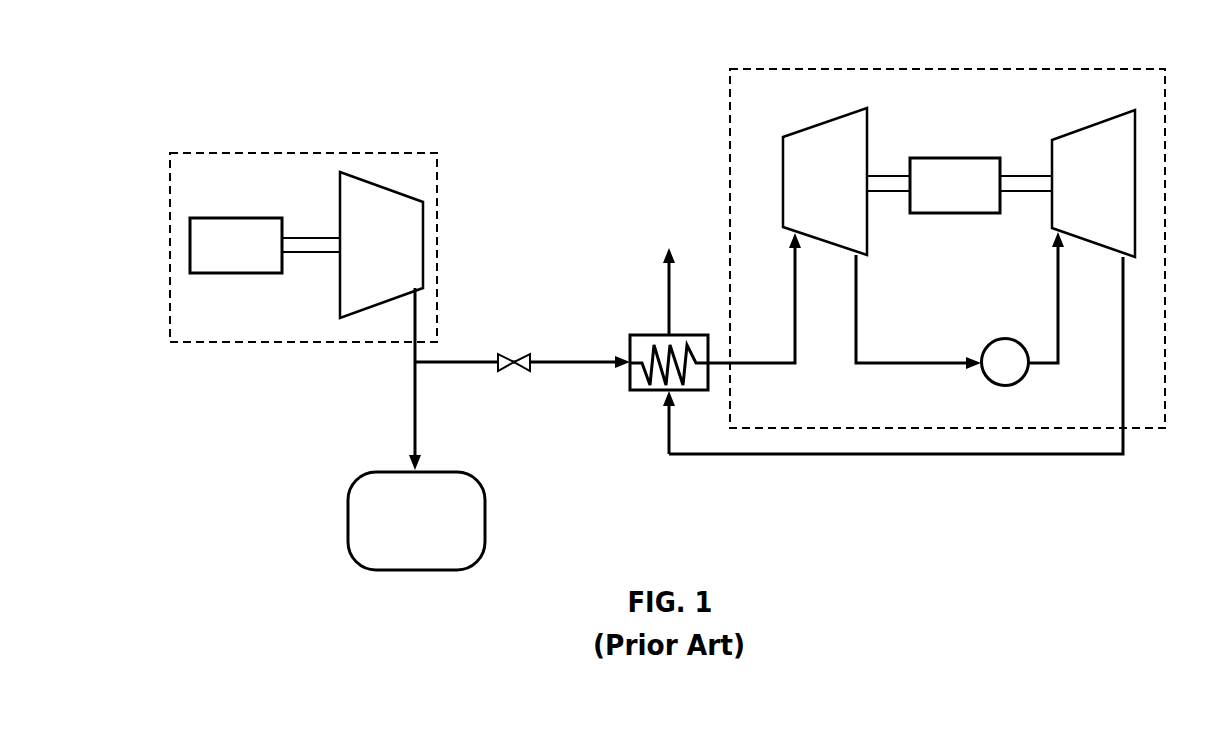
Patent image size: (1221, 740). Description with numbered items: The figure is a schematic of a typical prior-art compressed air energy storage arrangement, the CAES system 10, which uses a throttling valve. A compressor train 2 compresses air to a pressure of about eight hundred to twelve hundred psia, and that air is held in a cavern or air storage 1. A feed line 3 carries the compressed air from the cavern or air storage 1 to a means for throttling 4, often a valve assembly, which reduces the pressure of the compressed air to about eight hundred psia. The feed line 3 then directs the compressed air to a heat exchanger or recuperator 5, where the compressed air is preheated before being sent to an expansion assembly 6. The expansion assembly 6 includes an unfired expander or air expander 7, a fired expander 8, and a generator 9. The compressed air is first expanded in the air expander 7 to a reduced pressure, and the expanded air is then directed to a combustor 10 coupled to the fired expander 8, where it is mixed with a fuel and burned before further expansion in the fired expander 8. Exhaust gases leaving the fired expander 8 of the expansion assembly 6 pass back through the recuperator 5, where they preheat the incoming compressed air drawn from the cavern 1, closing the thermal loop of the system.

The cavern or air storage 1 is at (416, 521).
The compressor train 2 is at (190, 150).
The feed line 3 is at (445, 365).
The means for throttling 4 is at (510, 360).
The heat exchanger or recuperator 5 is at (630, 335).
The expansion assembly 6 is at (948, 64).
The unfired expander or air expander 7 is at (783, 137).
The fired expander 8 is at (1052, 140).
The generator 9 is at (959, 185).
The combustor 10 is at (987, 382).